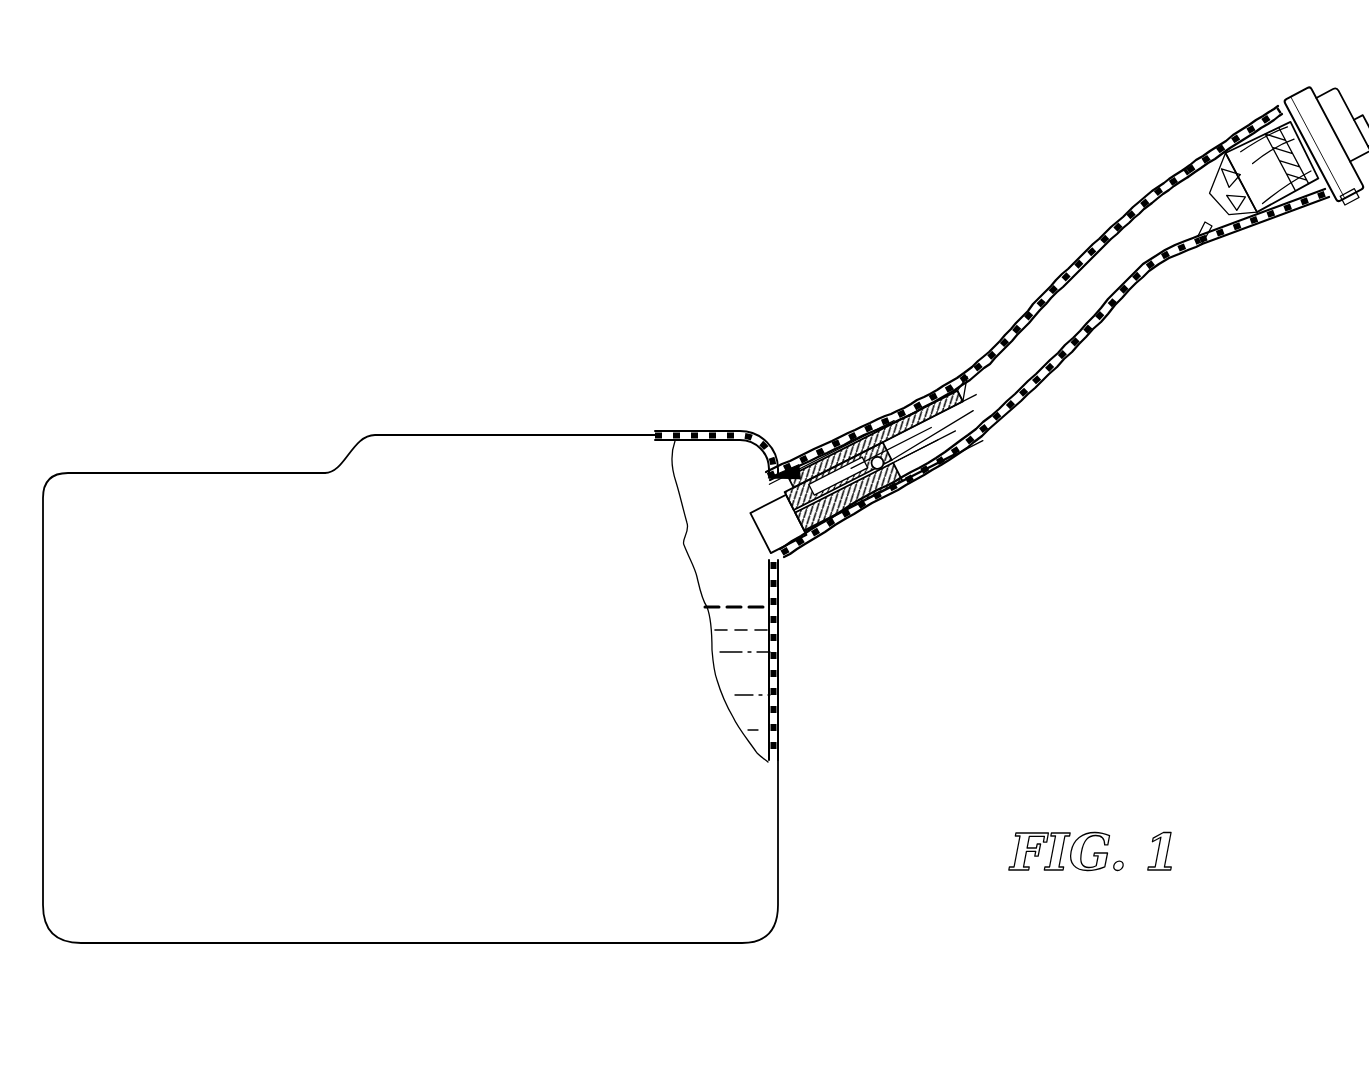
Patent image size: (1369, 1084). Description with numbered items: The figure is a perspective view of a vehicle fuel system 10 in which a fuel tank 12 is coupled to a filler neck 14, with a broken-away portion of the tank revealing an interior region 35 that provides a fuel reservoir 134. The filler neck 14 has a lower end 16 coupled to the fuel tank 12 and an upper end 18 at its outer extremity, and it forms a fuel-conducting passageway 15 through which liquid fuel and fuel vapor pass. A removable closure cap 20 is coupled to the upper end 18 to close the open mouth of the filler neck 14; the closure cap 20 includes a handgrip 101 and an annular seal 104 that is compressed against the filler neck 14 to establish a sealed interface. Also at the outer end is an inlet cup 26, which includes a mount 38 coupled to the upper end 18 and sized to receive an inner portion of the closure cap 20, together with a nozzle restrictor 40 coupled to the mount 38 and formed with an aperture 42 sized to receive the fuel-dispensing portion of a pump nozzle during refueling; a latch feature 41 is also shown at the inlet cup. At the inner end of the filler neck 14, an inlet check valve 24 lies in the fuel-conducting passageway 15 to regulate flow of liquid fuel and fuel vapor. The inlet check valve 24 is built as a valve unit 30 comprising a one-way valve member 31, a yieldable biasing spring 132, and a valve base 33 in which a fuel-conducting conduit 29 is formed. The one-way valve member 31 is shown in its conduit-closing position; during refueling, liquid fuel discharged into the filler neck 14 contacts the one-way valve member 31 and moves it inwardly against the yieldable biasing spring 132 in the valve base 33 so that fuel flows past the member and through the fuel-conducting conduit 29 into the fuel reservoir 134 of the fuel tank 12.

The vehicle fuel system 10 is at (866, 250).
The fuel tank 12 is at (580, 432).
The filler neck 14 is at (1033, 413).
The fuel-conducting passageway 15 is at (1040, 350).
The lower end 16 is at (788, 470).
The upper end 18 is at (1227, 132).
The removable closure cap 20 is at (1280, 92).
The inlet check valve 24 is at (938, 427).
The inlet cup 26 is at (1200, 210).
The fuel-conducting conduit 29 is at (895, 453).
The valve unit 30 is at (832, 452).
The one-way valve member 31 is at (853, 497).
The valve base 33 is at (917, 473).
The interior region 35 is at (711, 498).
The mount 38 is at (1303, 195).
The nozzle restrictor 40 is at (1240, 220).
The body 41 is at (1200, 156).
The aperture 42 is at (1208, 228).
The handgrip 101 is at (1337, 130).
The annular seal 104 is at (1337, 207).
The yieldable biasing spring 132 is at (887, 507).
The fuel reservoir 134 is at (743, 688).